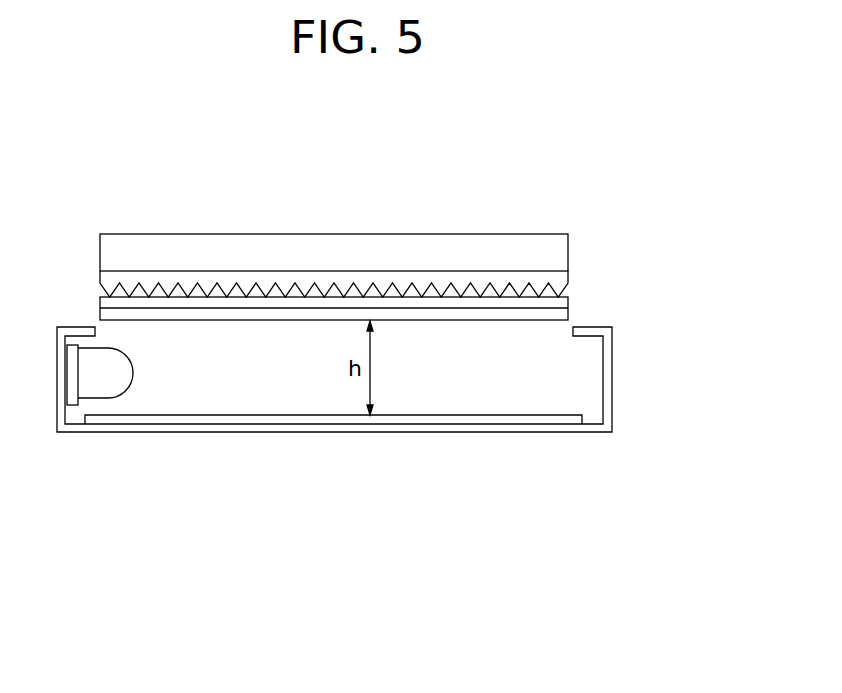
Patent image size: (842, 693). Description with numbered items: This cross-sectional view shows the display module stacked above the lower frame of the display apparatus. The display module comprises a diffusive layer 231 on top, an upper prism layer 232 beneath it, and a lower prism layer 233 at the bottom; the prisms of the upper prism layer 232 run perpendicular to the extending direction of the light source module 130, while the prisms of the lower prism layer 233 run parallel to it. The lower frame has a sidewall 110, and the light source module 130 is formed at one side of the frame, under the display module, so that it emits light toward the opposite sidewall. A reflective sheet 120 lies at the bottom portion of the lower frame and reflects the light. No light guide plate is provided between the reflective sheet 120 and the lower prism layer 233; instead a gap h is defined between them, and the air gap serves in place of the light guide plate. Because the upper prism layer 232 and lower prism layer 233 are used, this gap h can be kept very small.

The sidewall 110 is at (612, 377).
The reflective sheet 120 is at (480, 424).
The light source module 130 is at (102, 390).
The diffusive layer 231 is at (565, 249).
The upper prism layer 232 is at (565, 278).
The lower prism layer 233 is at (565, 302).